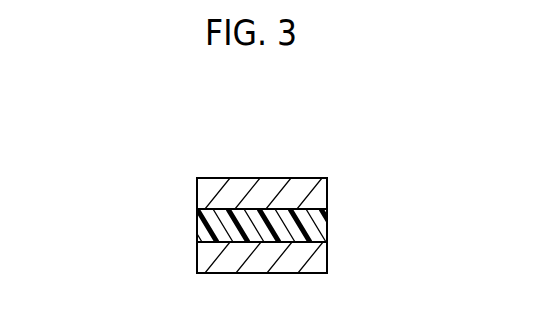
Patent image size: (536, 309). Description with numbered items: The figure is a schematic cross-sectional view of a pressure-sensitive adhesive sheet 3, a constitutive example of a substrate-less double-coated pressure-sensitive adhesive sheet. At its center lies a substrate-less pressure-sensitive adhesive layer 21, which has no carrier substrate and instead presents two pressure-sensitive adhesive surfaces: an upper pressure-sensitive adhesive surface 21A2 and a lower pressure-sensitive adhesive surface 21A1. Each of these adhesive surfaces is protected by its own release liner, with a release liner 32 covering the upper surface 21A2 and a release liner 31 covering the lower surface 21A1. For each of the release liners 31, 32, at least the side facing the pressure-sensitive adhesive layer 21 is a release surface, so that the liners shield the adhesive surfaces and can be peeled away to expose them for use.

The pressure-sensitive adhesive sheet 3 is at (304, 140).
The release liner 32 is at (327, 190).
The substrate-less pressure-sensitive adhesive layer 21 is at (327, 227).
The release liner 31 is at (327, 260).
The pressure-sensitive adhesive surface 21A2 is at (207, 210).
The pressure-sensitive adhesive surface 21A1 is at (217, 241).